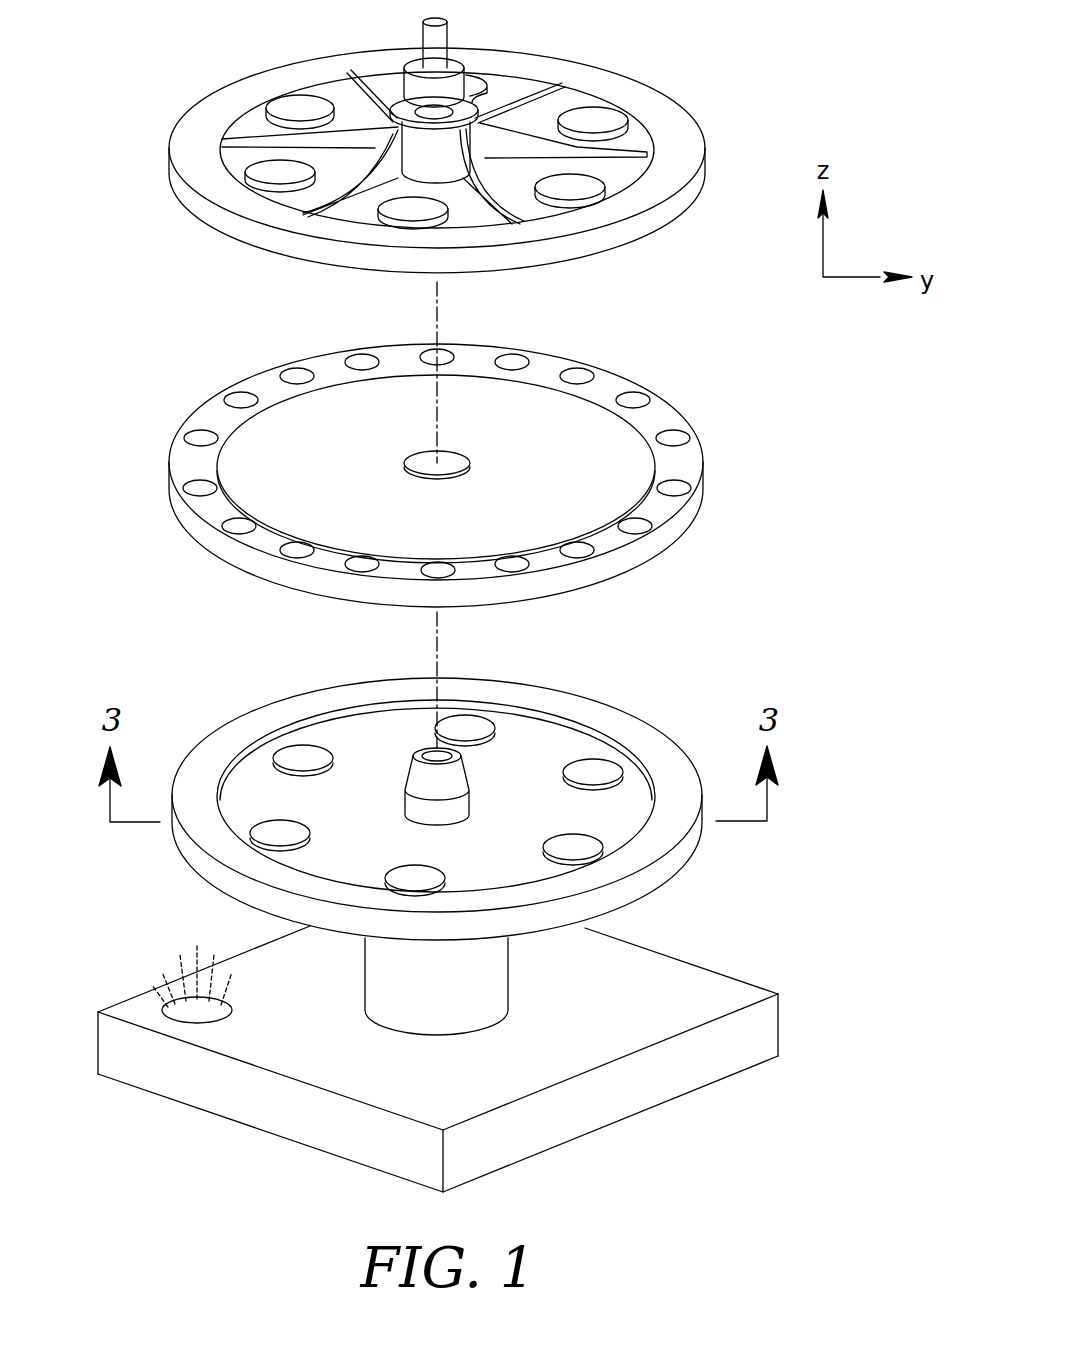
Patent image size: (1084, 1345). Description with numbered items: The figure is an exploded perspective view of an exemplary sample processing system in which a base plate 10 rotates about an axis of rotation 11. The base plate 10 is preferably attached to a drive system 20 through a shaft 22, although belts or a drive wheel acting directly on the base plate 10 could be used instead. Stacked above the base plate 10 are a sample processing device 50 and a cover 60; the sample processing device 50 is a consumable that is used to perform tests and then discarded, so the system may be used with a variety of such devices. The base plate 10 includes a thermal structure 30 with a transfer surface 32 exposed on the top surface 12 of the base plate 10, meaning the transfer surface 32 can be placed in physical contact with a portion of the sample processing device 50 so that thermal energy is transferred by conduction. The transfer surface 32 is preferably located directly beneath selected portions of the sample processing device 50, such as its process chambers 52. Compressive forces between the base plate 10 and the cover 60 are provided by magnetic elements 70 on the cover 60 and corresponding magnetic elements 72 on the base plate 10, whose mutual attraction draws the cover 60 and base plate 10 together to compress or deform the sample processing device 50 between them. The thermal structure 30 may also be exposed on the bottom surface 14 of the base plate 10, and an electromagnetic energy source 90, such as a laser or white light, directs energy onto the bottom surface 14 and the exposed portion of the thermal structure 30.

The base plate 10 is at (470, 597).
The axis of rotation 11 is at (437, 647).
The top surface 12 is at (384, 712).
The bottom surface 14 is at (445, 782).
The drive system 20 is at (470, 1059).
The shaft 22 is at (483, 978).
The thermal structure 30 is at (401, 782).
The transfer surface 32 is at (255, 722).
The sample processing device 50 is at (486, 470).
The process chambers 52 is at (633, 400).
The cover 60 is at (485, 138).
The magnetic elements 70 is at (598, 118).
The magnetic elements 72 is at (593, 773).
The electromagnetic energy source 90 is at (163, 1008).